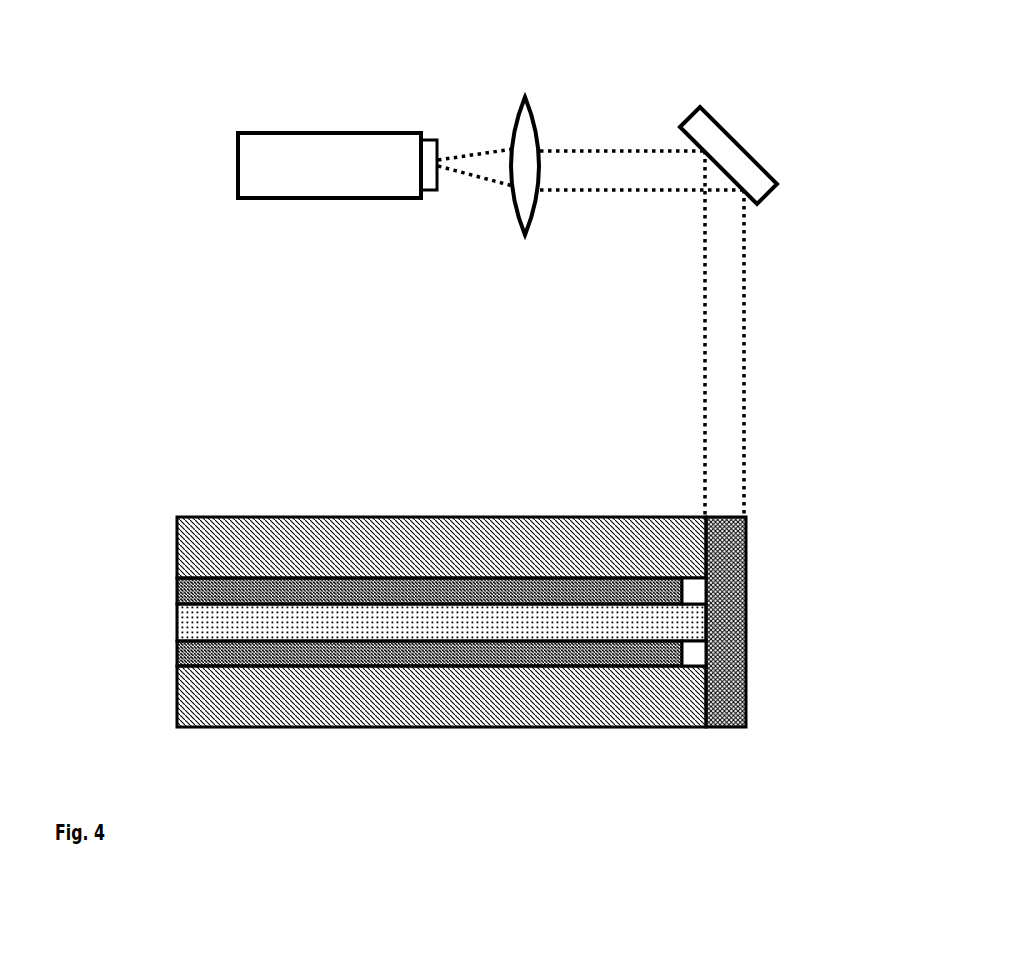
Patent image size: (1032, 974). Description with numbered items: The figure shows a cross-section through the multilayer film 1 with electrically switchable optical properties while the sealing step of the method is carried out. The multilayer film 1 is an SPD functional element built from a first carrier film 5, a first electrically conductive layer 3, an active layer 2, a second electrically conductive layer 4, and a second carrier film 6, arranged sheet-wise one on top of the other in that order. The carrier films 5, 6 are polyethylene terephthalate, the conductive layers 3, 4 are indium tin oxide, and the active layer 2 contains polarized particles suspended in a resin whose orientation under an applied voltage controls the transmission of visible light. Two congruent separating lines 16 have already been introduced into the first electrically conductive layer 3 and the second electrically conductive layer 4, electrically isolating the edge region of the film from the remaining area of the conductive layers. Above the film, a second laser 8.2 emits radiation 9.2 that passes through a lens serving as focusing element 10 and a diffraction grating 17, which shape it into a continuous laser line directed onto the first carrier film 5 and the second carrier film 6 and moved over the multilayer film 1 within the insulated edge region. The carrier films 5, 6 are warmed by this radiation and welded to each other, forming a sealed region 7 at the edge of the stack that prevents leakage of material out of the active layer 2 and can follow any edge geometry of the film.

The multilayer film 1 is at (194, 452).
The active layer 2 is at (202, 629).
The first electrically conductive layer 3 is at (213, 594).
The second electrically conductive layer 4 is at (203, 653).
The first carrier film 5 is at (212, 556).
The second carrier film 6 is at (212, 700).
The sealed region 7 is at (730, 672).
The second laser 8.2 is at (277, 174).
The radiation 9.2 is at (643, 150).
The focusing element 10 is at (524, 140).
The separating lines 16 is at (695, 655).
The diffraction grating 17 is at (730, 157).